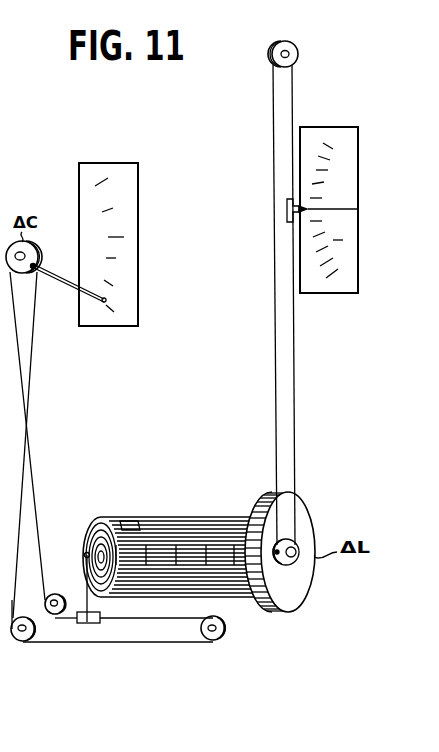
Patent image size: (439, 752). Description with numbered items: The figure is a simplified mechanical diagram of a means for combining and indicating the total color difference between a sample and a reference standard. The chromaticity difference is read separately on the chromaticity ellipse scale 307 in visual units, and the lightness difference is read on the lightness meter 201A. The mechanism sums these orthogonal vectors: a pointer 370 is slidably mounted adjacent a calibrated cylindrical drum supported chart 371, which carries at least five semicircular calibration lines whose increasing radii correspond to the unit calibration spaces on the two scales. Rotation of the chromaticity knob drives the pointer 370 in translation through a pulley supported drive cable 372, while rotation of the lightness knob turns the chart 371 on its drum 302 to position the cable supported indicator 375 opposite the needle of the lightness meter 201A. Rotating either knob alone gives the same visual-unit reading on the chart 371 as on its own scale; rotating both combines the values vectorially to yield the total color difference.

The chromaticity ellipse scale 307 is at (140, 213).
The lightness meter 201A is at (359, 196).
The cable supported indicator 375 is at (290, 210).
The pulley supported drive cable 372 is at (30, 481).
The calibrated cylindrical drum supported chart 371 is at (128, 521).
The pointer 370 is at (85, 598).
The color difference drum 302 is at (232, 592).